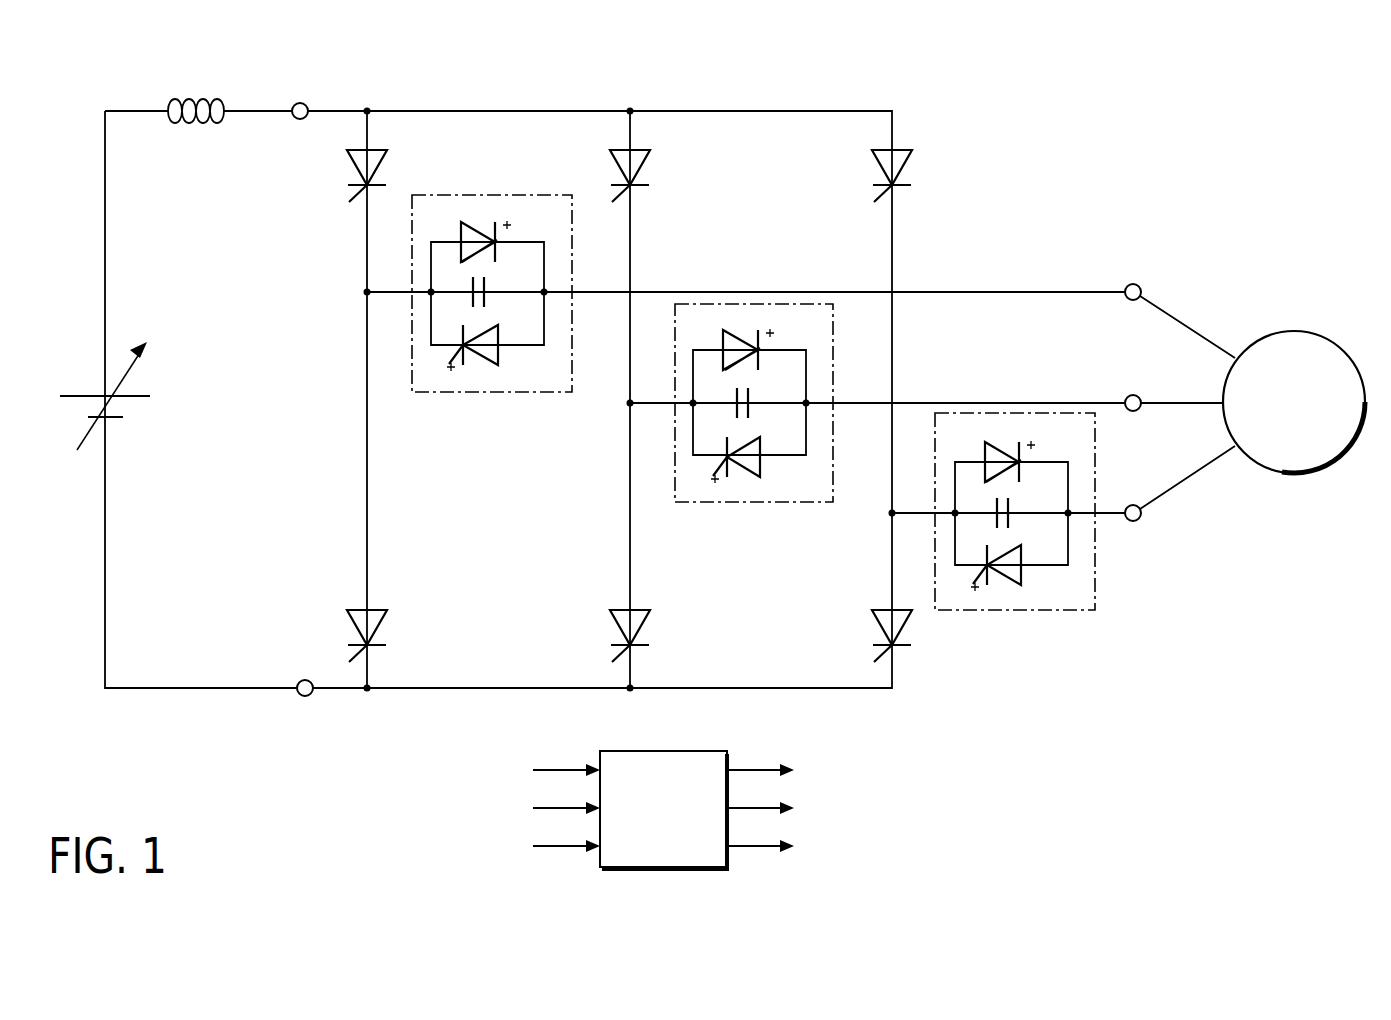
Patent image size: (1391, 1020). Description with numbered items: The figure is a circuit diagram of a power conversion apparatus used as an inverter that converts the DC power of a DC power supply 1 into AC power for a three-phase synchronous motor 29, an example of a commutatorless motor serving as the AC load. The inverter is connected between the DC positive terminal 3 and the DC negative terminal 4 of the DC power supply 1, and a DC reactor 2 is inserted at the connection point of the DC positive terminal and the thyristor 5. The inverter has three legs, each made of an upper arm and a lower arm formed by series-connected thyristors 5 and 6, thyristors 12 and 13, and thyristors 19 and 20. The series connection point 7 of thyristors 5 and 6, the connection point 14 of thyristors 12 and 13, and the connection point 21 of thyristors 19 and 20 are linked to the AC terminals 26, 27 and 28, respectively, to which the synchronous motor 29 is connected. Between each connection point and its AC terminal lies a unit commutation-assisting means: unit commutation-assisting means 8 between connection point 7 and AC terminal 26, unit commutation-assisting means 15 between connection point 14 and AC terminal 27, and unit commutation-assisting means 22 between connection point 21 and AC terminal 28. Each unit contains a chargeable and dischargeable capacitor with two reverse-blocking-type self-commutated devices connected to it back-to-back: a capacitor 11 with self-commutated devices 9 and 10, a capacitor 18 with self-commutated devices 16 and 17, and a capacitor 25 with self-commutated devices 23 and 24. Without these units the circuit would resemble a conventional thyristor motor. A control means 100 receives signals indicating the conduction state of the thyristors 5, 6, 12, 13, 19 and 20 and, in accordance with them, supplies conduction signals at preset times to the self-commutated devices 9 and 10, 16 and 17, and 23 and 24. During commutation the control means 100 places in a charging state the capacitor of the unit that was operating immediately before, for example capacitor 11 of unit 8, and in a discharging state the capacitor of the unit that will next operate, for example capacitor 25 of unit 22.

The DC power supply 1 is at (130, 405).
The DC reactor 2 is at (190, 124).
The DC positive terminal 3 is at (300, 103).
The DC negative terminal 4 is at (305, 680).
The thyristor 5 is at (350, 165).
The thyristor 6 is at (383, 620).
The connection point 7 is at (367, 292).
The unit commutation-assisting means 8 is at (492, 321).
The reverse-blocking-type self-commutated device 9 is at (503, 236).
The reverse-blocking-type self-commutated device 10 is at (500, 355).
The capacitor 11 is at (482, 285).
The thyristor 12 is at (645, 160).
The thyristor 13 is at (645, 620).
The connection point 14 is at (630, 403).
The unit commutation-assisting means 15 is at (754, 429).
The reverse-blocking-type self-commutated device 16 is at (766, 344).
The reverse-blocking-type self-commutated device 17 is at (763, 467).
The capacitor 18 is at (746, 396).
The thyristor 19 is at (907, 160).
The thyristor 20 is at (907, 620).
The connection point 21 is at (892, 513).
The unit commutation-assisting means 22 is at (1015, 538).
The reverse-blocking-type self-commutated device 23 is at (1027, 456).
The reverse-blocking-type self-commutated device 24 is at (1024, 576).
The capacitor 25 is at (1006, 506).
The AC terminal 26 is at (1133, 300).
The AC terminal 27 is at (1139, 397).
The AC terminal 28 is at (1133, 521).
The synchronous motor 29 is at (1298, 332).
The control means 100 is at (677, 751).